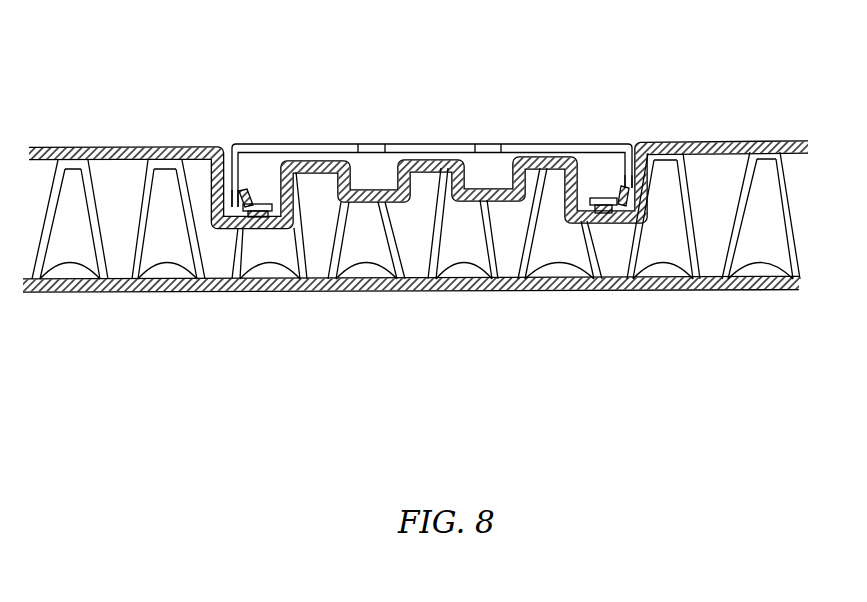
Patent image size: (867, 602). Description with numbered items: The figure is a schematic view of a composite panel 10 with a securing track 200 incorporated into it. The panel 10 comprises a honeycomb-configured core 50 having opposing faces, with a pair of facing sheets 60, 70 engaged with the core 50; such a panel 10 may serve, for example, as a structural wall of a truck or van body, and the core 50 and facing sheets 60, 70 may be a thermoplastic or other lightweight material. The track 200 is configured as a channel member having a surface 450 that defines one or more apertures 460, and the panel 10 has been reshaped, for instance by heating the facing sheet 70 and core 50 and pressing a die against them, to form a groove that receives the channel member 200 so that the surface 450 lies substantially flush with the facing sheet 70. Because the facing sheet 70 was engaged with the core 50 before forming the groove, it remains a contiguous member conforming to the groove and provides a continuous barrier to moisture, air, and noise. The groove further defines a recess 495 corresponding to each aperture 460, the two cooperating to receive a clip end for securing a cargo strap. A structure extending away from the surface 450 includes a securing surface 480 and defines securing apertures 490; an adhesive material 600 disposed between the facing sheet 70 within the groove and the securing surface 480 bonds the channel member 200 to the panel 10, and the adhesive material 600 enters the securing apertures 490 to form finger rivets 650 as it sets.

The composite panel 10 is at (565, 298).
The core 50 is at (745, 252).
The facing sheet 60 is at (368, 180).
The facing sheet 70 is at (112, 147).
The track 200 is at (433, 145).
The surface 450 is at (553, 162).
The aperture 460 is at (365, 146).
The securing surface 480 is at (248, 222).
The securing aperture 490 is at (234, 196).
The recess 495 is at (483, 175).
The adhesive material 600 is at (256, 214).
The finger rivets 650 is at (251, 194).